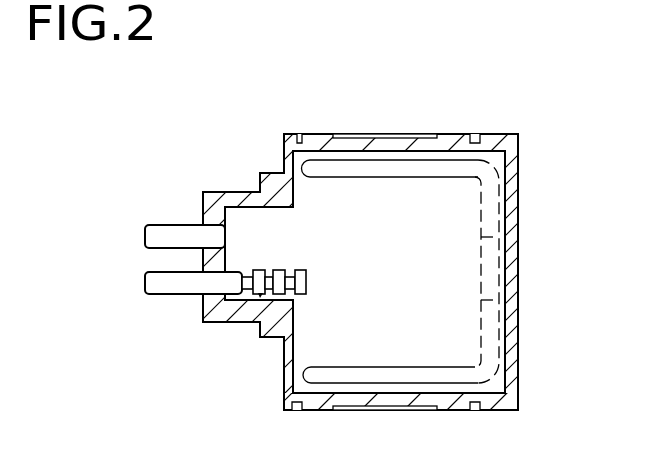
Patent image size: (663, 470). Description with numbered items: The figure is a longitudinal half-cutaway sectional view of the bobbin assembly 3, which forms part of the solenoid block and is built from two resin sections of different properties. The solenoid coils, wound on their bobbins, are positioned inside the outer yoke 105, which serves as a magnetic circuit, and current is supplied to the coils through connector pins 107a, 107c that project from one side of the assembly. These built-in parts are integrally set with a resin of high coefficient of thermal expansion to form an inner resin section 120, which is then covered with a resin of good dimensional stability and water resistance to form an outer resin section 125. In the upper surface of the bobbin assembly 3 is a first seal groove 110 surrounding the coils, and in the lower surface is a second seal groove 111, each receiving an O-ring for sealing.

The bobbin assembly 3 is at (526, 170).
The outer yoke 105 is at (320, 375).
The connector pin 107a is at (150, 286).
The connector pin 107c is at (165, 225).
The first seal groove 110 is at (477, 133).
The second seal groove 111 is at (478, 412).
The inner resin section 120 is at (497, 163).
The outer resin section 125 is at (518, 243).